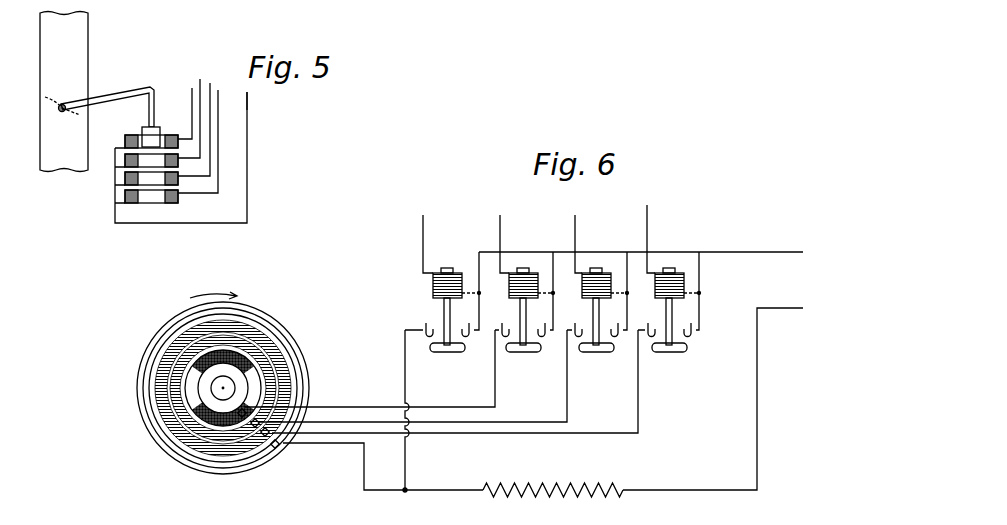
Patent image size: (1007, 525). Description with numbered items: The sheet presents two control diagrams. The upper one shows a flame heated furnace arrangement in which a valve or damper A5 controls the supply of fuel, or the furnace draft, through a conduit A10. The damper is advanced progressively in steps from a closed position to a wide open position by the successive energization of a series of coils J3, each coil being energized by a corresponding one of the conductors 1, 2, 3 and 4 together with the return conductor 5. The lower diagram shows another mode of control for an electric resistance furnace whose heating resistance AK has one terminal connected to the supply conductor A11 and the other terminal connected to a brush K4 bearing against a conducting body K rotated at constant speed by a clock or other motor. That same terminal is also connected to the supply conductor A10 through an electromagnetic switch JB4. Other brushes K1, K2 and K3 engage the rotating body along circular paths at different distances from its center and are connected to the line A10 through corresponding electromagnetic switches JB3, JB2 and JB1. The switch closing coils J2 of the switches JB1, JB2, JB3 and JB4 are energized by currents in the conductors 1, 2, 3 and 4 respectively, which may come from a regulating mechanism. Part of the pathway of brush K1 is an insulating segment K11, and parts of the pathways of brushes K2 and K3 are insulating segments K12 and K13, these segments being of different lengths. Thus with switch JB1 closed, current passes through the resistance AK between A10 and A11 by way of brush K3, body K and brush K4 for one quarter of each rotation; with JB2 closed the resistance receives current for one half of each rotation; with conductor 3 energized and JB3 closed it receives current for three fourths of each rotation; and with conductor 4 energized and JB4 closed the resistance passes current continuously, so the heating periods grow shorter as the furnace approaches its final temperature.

In FIG. 5, the conduit / supply conductor A10 is at (88, 62).
In FIG. 6, the conduit / supply conductor A10 is at (773, 238).
In FIG. 5, the valve or damper A5 is at (58, 110).
In FIG. 6, the supply conductor A11 is at (786, 298).
In FIG. 6, the heating resistance AK is at (570, 495).
In FIG. 5, the coils J3 is at (131, 138).
In FIG. 6, the switch closing coils J2 is at (455, 272).
In FIG. 6, the electromagnetic switch JB1 is at (669, 352).
In FIG. 6, the electromagnetic switch JB2 is at (596, 352).
In FIG. 6, the electromagnetic switch JB3 is at (521, 352).
In FIG. 6, the electromagnetic switch JB4 is at (445, 352).
In FIG. 5, the conductor 1 is at (192, 98).
In FIG. 6, the conductor 1 is at (650, 225).
In FIG. 5, the conductor 2 is at (190, 109).
In FIG. 6, the conductor 2 is at (575, 233).
In FIG. 5, the conductor 3 is at (201, 120).
In FIG. 6, the conductor 3 is at (500, 236).
In FIG. 5, the conductor 4 is at (218, 97).
In FIG. 6, the conductor 4 is at (424, 233).
In FIG. 5, the return conductor 5 is at (247, 104).
In FIG. 6, the conducting body K is at (282, 333).
In FIG. 6, the brush K1 is at (242, 416).
In FIG. 6, the brush K2 is at (255, 426).
In FIG. 6, the brush K3 is at (266, 436).
In FIG. 6, the brush K4 is at (285, 453).
In FIG. 6, the insulating segment K11 is at (178, 342).
In FIG. 6, the insulating segment K12 is at (177, 378).
In FIG. 6, the insulating segment K13 is at (162, 408).